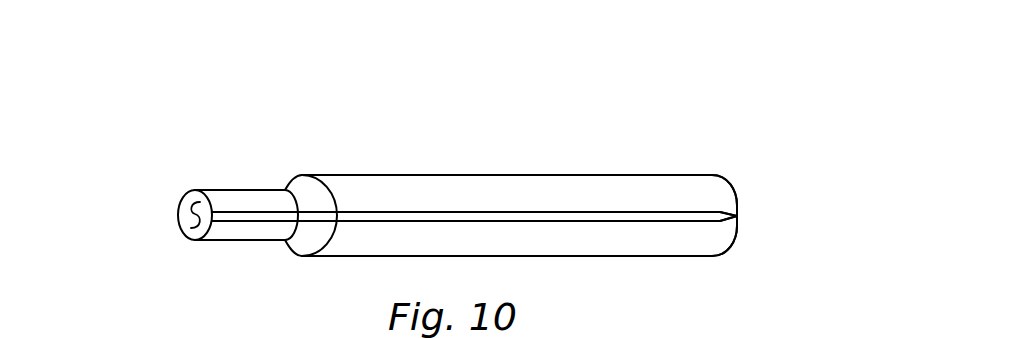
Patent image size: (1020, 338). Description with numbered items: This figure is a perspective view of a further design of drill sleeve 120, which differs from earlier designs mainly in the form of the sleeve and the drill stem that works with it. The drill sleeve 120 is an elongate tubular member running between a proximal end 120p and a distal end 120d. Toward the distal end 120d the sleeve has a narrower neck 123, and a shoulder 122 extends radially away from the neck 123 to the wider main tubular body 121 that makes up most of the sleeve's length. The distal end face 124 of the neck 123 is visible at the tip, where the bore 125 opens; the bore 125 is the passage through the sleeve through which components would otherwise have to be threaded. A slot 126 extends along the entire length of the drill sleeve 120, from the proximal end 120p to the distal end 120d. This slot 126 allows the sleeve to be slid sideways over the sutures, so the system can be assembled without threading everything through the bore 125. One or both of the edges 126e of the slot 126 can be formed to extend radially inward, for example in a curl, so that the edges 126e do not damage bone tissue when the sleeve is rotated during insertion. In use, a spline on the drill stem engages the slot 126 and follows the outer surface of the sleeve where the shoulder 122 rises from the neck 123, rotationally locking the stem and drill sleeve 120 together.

The drill sleeve 120 is at (437, 105).
The distal end 120d is at (160, 127).
The proximal end 120p is at (767, 172).
The main tubular body 121 is at (482, 185).
The shoulder 122 is at (292, 187).
The neck 123 is at (243, 188).
The distal end face 124 is at (180, 207).
The bore 125 is at (195, 217).
The slot 126 is at (588, 213).
The edges of the slot 126e is at (730, 217).